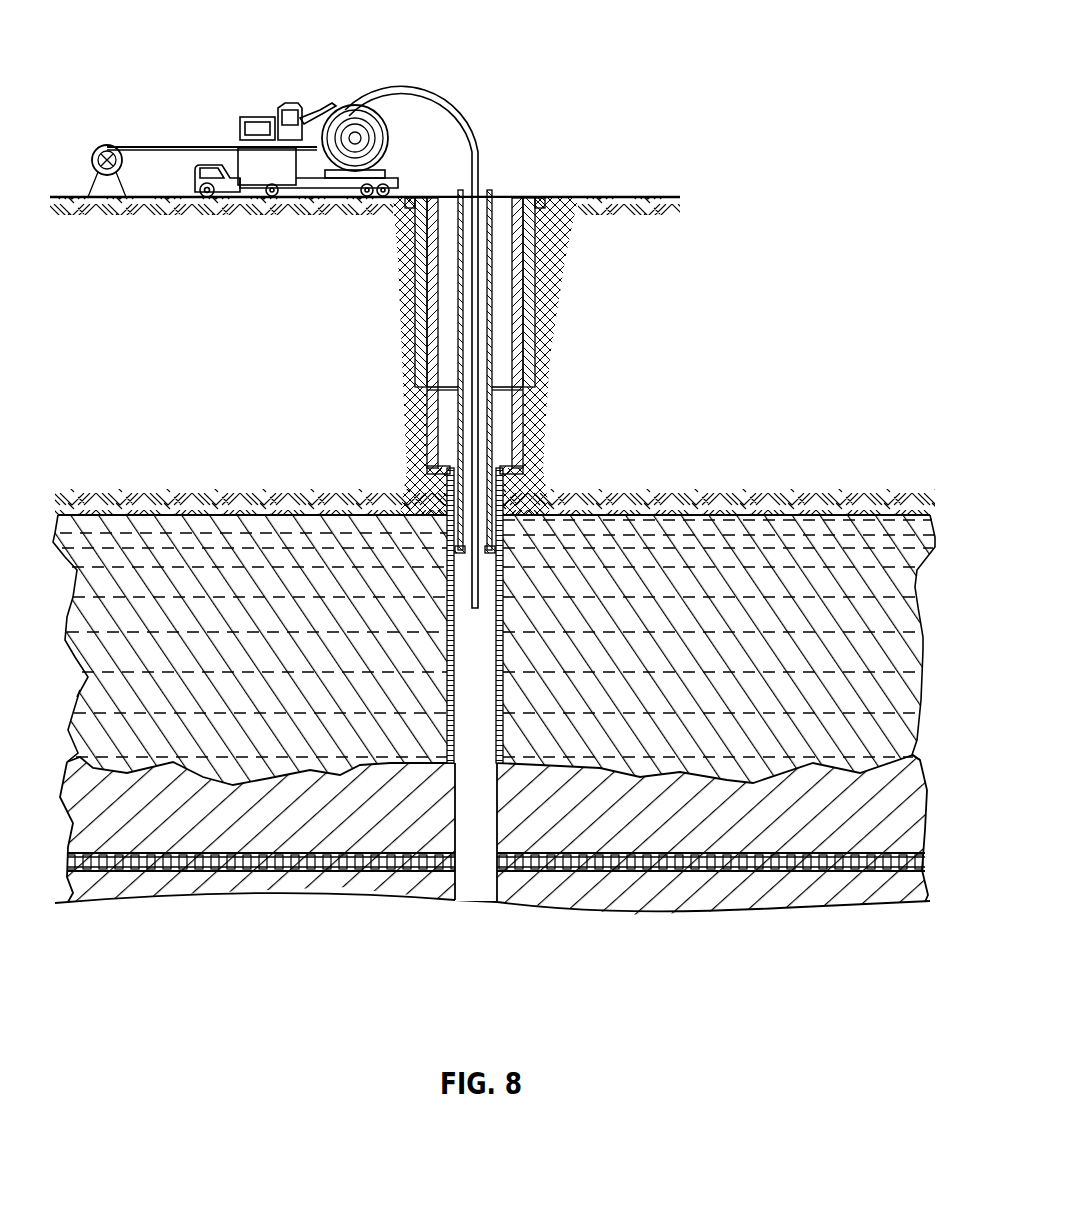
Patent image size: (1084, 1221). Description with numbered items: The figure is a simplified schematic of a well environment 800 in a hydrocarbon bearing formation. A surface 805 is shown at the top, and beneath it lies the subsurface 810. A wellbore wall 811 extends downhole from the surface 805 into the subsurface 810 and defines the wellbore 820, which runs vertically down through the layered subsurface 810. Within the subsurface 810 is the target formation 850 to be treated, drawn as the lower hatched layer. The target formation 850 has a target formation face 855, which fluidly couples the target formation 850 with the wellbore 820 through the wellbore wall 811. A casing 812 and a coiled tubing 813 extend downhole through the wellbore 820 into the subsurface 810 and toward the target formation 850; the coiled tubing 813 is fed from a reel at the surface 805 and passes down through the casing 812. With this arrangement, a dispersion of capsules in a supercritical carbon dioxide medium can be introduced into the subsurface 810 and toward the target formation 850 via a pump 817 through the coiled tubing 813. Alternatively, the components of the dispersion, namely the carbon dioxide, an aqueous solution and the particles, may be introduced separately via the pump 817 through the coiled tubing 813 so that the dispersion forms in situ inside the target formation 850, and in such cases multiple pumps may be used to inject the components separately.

The well environment 800 is at (764, 90).
The surface 805 is at (654, 154).
The subsurface 810 is at (653, 597).
The wellbore wall 811 is at (520, 447).
The casing 812 is at (502, 295).
The coiled tubing 813 is at (352, 107).
The pump 817 is at (90, 160).
The wellbore 820 is at (497, 826).
The target formation 850 is at (942, 858).
The target formation face 855 is at (490, 864).